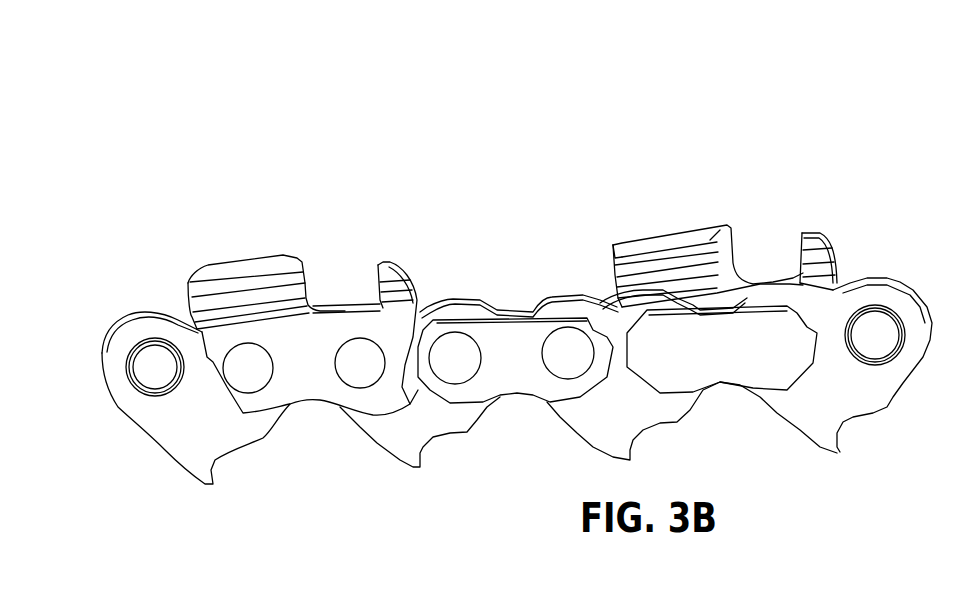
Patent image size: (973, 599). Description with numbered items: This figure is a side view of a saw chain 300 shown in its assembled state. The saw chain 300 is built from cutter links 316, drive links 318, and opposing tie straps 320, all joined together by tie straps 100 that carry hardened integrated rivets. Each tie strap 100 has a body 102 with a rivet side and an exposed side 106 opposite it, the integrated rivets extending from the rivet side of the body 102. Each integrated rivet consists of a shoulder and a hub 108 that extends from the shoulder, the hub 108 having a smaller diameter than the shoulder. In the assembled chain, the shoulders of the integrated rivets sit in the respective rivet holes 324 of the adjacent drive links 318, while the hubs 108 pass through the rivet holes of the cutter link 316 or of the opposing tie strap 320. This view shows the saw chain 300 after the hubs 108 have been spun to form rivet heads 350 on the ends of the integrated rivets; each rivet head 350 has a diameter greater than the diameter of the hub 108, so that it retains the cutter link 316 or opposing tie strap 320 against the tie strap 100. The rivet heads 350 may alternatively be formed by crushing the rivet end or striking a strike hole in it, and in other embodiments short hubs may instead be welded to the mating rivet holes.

The saw chain 300 is at (205, 135).
The cutter link 316 is at (315, 338).
The hub 108 is at (243, 363).
The opposing tie strap 320 is at (503, 327).
The exposed side 106 is at (657, 330).
The body 102 is at (753, 333).
The tie strap 100 is at (735, 400).
The rivet hole 324 is at (155, 377).
The drive link 318 is at (180, 420).
The rivet head 350 is at (367, 370).